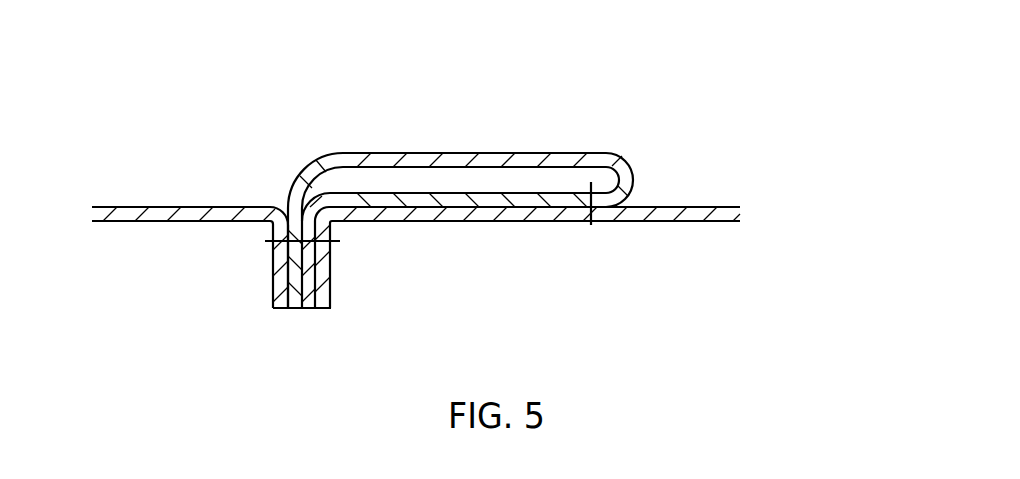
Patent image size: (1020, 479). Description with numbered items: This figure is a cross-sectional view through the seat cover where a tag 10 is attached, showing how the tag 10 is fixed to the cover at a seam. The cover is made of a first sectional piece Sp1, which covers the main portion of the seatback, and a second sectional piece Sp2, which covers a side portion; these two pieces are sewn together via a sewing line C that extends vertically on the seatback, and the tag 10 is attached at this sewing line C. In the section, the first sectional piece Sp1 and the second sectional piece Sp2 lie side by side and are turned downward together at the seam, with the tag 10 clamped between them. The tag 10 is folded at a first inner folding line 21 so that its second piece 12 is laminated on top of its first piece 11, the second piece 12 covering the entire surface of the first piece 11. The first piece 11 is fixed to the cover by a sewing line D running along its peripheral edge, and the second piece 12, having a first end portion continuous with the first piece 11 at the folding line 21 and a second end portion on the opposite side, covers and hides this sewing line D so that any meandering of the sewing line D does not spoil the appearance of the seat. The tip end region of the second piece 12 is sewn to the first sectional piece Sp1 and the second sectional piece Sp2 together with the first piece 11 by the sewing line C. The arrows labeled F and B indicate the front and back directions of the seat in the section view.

The tag 10 is at (472, 190).
The first piece 11 is at (483, 197).
The second piece 12 is at (483, 160).
The first inner folding line 21 is at (622, 175).
The first sectional piece Sp1 is at (693, 210).
The second sectional piece Sp2 is at (157, 205).
The sewing line C is at (337, 241).
The sewing line D is at (591, 225).
The front direction F is at (405, 122).
The back direction B is at (405, 330).